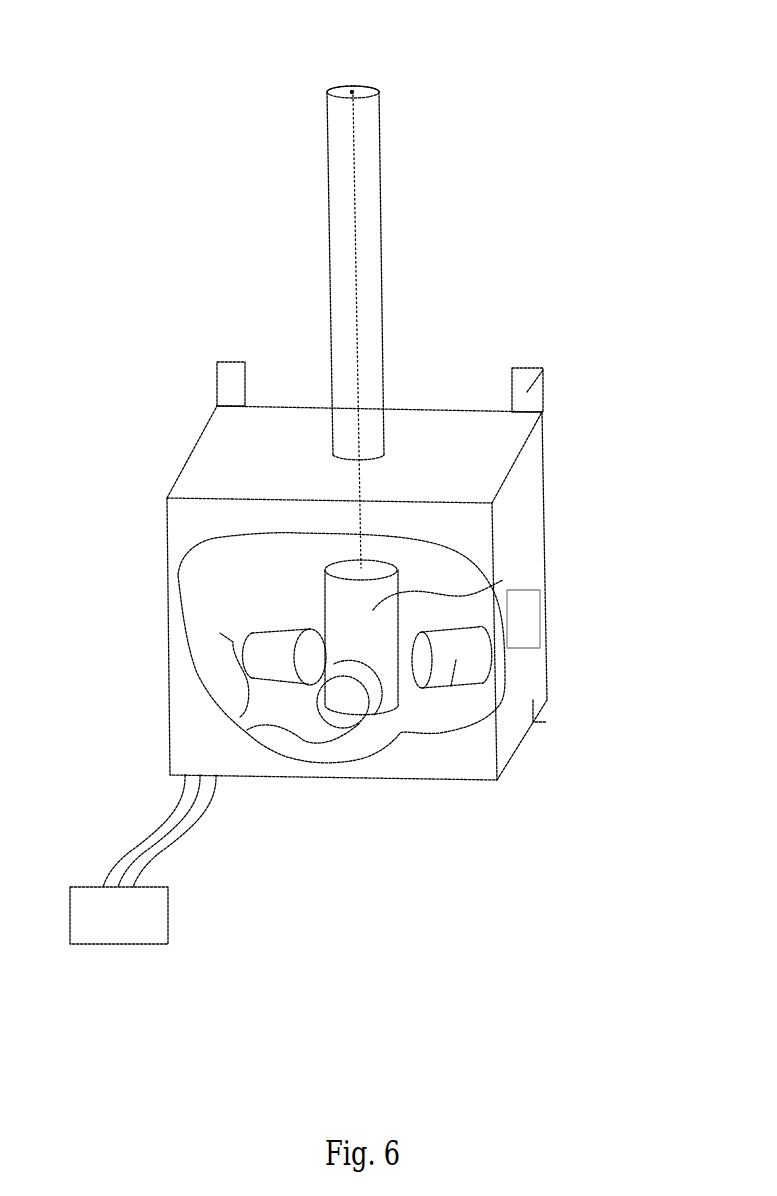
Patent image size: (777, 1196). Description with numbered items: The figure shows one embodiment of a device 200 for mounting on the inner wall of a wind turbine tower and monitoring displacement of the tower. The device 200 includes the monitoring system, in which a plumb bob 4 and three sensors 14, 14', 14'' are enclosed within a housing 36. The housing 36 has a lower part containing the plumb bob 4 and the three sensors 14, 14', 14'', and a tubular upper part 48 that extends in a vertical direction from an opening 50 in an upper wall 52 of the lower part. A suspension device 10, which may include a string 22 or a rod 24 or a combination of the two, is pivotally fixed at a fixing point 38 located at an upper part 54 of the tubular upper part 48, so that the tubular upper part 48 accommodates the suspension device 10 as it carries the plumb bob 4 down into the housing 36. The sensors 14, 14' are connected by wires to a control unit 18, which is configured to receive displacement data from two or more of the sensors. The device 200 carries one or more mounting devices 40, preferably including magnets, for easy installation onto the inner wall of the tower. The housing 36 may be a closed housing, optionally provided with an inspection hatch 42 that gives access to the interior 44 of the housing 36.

The plumb bob 4 is at (505, 582).
The suspension device 10 is at (448, 331).
The string 22 is at (448, 331).
The rod 24 is at (355, 205).
The sensor 14 is at (504, 708).
The sensor 14' is at (364, 772).
The sensor 14'' is at (211, 628).
The control unit 18 is at (153, 922).
The housing 36 is at (527, 483).
The fixing point 38 is at (352, 92).
The mounting device 40 is at (212, 392).
The inspection hatch 42 is at (530, 618).
The interior 44 is at (427, 713).
The tubular upper part 48 is at (327, 162).
The opening 50 is at (353, 455).
The upper wall 52 is at (443, 437).
The upper part 54 is at (373, 95).
The device 200 is at (560, 137).